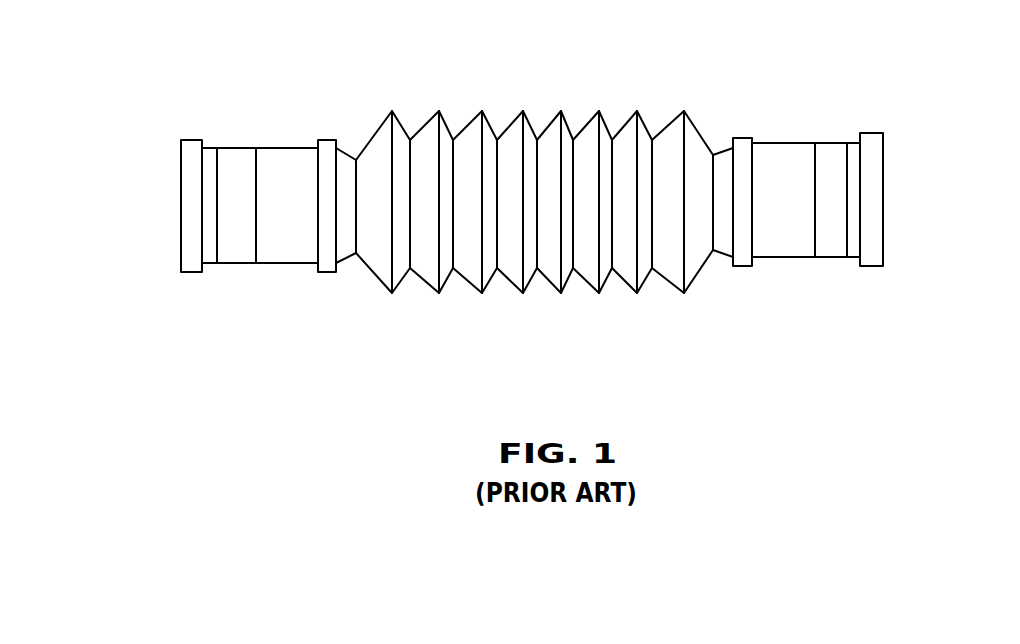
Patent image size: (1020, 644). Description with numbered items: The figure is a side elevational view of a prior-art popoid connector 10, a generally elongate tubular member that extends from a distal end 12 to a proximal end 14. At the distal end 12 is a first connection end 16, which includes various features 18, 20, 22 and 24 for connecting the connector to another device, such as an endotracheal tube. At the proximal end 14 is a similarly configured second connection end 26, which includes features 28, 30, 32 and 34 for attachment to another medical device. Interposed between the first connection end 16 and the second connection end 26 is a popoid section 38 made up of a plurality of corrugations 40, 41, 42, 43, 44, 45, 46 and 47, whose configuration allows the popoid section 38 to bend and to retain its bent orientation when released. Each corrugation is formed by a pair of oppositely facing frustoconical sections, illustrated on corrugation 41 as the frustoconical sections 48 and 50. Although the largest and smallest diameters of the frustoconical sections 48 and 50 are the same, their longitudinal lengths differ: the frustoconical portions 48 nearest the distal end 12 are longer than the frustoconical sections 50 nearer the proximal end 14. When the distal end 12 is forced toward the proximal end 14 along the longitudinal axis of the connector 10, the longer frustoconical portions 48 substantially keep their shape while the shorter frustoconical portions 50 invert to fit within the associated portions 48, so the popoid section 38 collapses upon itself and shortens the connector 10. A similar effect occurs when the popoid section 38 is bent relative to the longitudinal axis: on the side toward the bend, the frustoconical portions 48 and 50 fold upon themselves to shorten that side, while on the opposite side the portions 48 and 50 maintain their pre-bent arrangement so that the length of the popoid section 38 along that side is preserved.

The popoid connector 10 is at (125, 104).
The distal end 12 is at (189, 274).
The proximal end 14 is at (874, 267).
The first connection end 16 is at (248, 147).
The connecting feature 18 is at (190, 140).
The connecting feature 20 is at (217, 265).
The connecting feature 22 is at (257, 265).
The connecting feature 24 is at (327, 273).
The second connection end 26 is at (793, 143).
The attachment feature 28 is at (873, 133).
The attachment feature 30 is at (847, 258).
The attachment feature 32 is at (814, 258).
The attachment feature 34 is at (742, 267).
The popoid section 38 is at (590, 74).
The corrugation 40 is at (392, 295).
The corrugation 41 is at (439, 295).
The corrugation 42 is at (482, 295).
The corrugation 43 is at (522, 295).
The corrugation 44 is at (561, 295).
The corrugation 45 is at (599, 295).
The corrugation 46 is at (636, 110).
The corrugation 47 is at (686, 108).
The frustoconical section 48 is at (379, 126).
The frustoconical section 50 is at (452, 130).